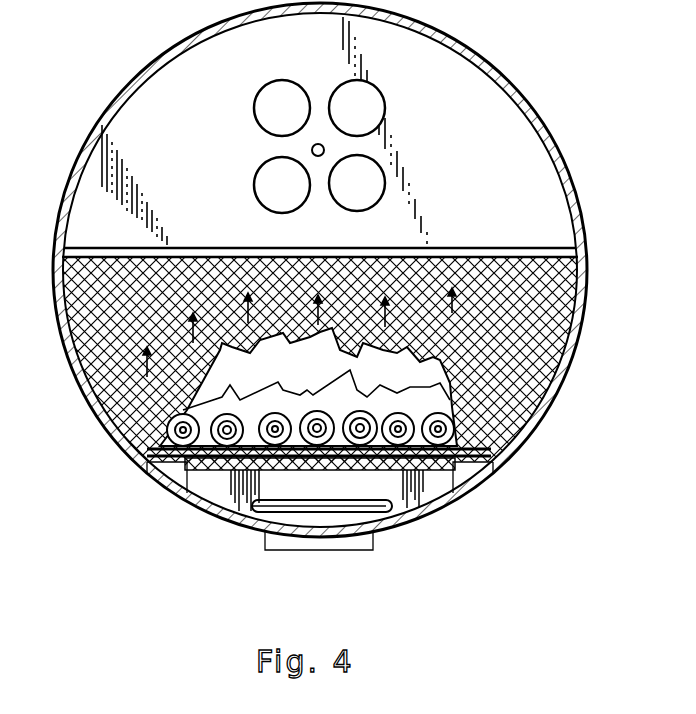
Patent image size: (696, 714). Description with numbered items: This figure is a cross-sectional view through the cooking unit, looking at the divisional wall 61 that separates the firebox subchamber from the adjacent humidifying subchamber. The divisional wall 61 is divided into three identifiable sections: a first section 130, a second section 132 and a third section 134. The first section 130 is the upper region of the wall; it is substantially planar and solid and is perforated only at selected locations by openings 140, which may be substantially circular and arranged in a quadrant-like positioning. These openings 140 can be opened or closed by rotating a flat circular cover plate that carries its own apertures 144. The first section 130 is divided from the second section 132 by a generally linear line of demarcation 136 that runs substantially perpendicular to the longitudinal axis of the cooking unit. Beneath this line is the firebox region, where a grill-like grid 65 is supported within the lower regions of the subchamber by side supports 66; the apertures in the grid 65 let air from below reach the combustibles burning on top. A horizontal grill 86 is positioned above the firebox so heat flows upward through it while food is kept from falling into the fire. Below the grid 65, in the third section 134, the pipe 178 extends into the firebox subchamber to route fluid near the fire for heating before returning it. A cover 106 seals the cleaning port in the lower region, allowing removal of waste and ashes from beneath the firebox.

The divisional wall 61 is at (563, 325).
The grid 65 is at (222, 518).
The side supports 66 is at (163, 472).
The grill 86 is at (70, 248).
The cover 106 is at (295, 552).
The first section 130 is at (535, 155).
The second section 132 is at (525, 390).
The third section 134 is at (437, 488).
The line of demarcation 136 is at (573, 250).
The openings 140 is at (267, 93).
The apertures 144 is at (319, 144).
The pipe 178 is at (387, 520).